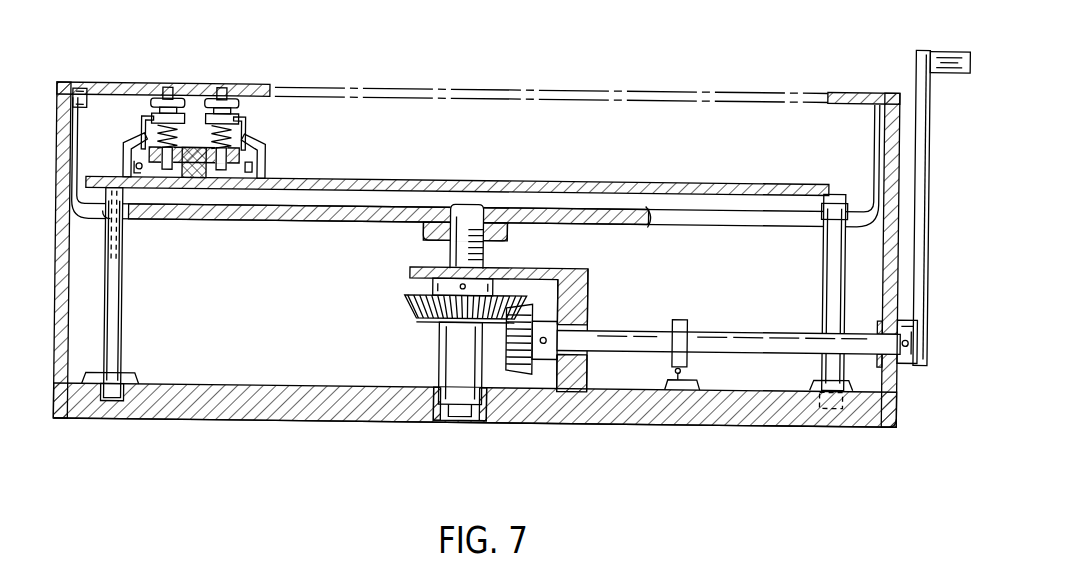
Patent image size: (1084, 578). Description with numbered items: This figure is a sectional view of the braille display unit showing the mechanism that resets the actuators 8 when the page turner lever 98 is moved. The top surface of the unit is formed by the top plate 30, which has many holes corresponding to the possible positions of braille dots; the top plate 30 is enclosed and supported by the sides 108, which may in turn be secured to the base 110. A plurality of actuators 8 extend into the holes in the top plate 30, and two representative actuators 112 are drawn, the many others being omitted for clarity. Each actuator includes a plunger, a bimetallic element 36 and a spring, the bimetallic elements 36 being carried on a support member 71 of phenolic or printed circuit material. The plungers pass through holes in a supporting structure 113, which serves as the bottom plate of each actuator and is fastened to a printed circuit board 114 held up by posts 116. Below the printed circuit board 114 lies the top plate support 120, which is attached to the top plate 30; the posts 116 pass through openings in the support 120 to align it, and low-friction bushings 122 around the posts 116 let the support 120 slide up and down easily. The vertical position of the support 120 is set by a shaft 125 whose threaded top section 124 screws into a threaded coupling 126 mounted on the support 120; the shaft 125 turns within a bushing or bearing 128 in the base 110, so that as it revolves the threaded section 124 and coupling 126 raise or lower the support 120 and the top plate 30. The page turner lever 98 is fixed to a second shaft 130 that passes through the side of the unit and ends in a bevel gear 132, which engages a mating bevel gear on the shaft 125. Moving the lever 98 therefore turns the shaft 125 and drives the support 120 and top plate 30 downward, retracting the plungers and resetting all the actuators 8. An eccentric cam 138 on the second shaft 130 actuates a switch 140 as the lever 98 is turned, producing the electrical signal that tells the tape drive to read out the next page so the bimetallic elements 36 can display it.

The actuator 8 is at (279, 112).
The top plate 30 is at (543, 88).
The bimetallic element 36 is at (146, 120).
The support member 71 is at (137, 160).
The page turner lever 98 is at (942, 53).
The sides 108 is at (55, 92).
The base 110 is at (303, 412).
The representative actuators 112 is at (208, 73).
The supporting structure 113 is at (196, 148).
The printed circuit board 114 is at (616, 182).
The post 116 is at (118, 327).
The top plate support 120 is at (337, 220).
The bushing 122 is at (127, 223).
The threaded top section 124 is at (467, 253).
The shaft 125 is at (440, 349).
The threaded coupling 126 is at (506, 235).
The bushing or bearing 128 is at (483, 425).
The second shaft 130 is at (753, 337).
The bevel gear 132 is at (533, 315).
The eccentric cam 138 is at (682, 320).
The switch 140 is at (700, 385).